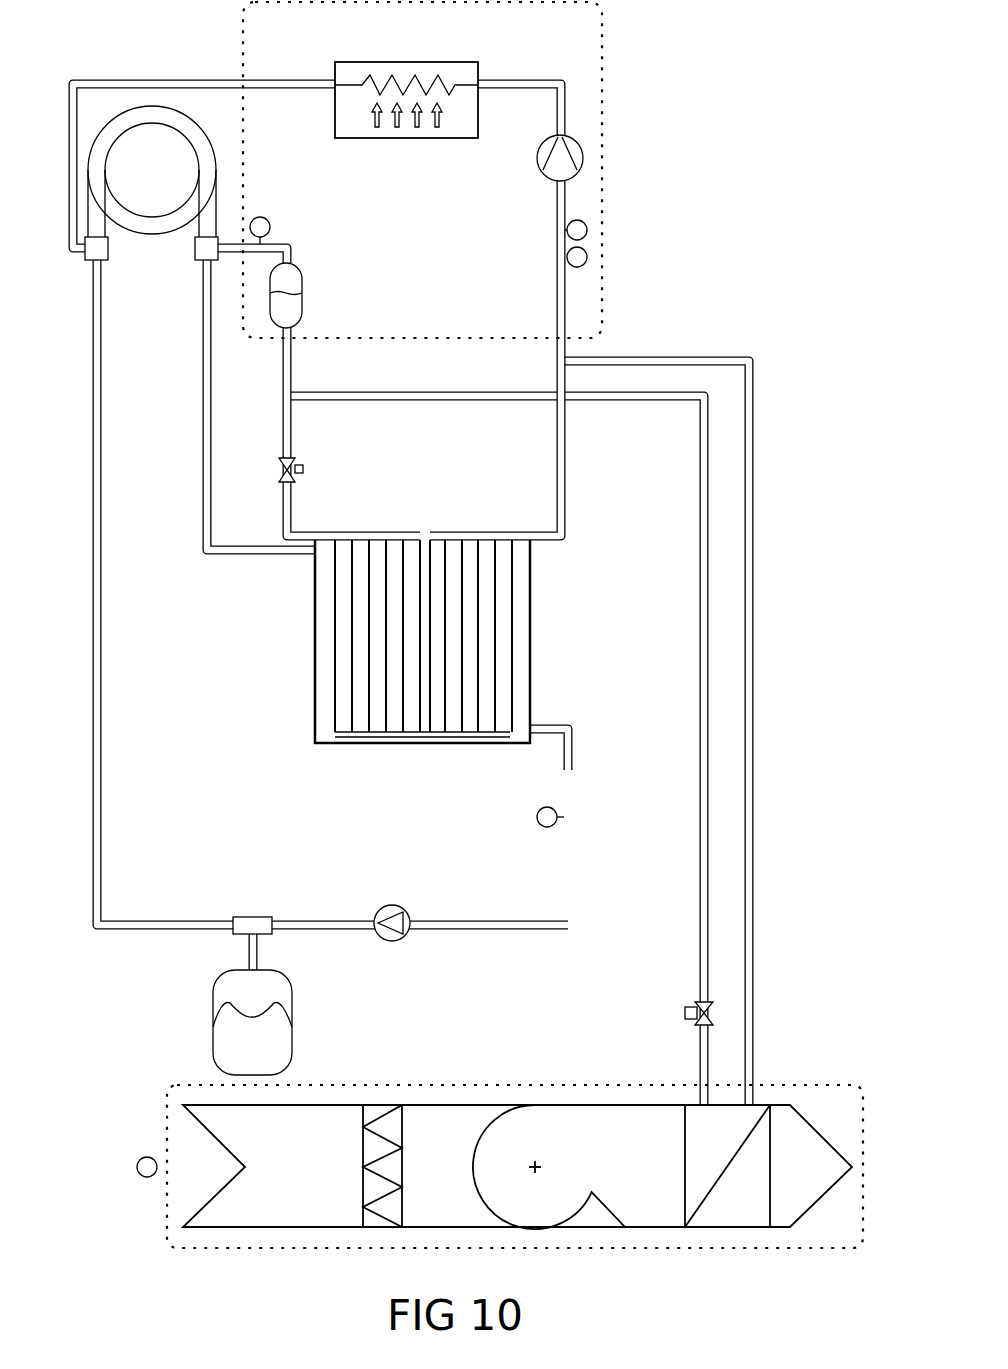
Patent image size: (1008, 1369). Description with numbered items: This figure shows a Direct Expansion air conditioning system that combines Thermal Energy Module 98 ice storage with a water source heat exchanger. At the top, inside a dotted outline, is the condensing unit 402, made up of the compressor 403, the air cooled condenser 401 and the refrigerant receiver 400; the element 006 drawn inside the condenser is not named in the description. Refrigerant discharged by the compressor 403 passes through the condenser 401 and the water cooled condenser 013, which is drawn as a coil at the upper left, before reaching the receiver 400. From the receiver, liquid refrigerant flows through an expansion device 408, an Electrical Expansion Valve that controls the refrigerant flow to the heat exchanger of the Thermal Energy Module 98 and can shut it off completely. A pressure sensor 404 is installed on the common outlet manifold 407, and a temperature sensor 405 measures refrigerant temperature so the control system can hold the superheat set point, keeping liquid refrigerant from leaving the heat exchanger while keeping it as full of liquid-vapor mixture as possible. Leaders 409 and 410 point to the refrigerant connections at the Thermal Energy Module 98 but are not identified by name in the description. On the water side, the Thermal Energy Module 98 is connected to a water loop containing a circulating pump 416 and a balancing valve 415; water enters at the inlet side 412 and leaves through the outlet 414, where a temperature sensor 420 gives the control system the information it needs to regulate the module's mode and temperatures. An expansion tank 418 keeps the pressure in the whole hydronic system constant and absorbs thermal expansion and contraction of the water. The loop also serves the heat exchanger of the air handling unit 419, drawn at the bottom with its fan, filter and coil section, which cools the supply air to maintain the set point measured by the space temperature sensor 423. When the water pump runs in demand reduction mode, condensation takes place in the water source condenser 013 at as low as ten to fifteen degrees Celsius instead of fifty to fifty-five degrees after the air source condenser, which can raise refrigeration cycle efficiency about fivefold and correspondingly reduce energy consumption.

The condenser 401 is at (407, 62).
The condensing unit 402 is at (603, 43).
The compressor 403 is at (583, 155).
The pressure sensor 404 is at (587, 228).
The temperature sensor 405 is at (587, 257).
The heating elements 006 is at (372, 125).
The water cooled condenser 013 is at (152, 230).
The refrigerant receiver 400 is at (302, 297).
The common outlet manifold 407 is at (733, 357).
The expansion device 408 is at (303, 469).
The inlet pipe 409 is at (282, 532).
The outlet pipe 410 is at (540, 543).
The inlet side 412 is at (208, 560).
The Thermal Energy Module 98 is at (417, 743).
The Thermal Energy Module outlet 414 is at (573, 712).
The circulating pump 416 is at (392, 905).
The expansion tank 418 is at (213, 1013).
The temperature sensor 420 is at (537, 819).
The balancing valve 415 is at (685, 1013).
The air handling unit 419 is at (167, 1103).
The space temperature sensor 423 is at (138, 1172).